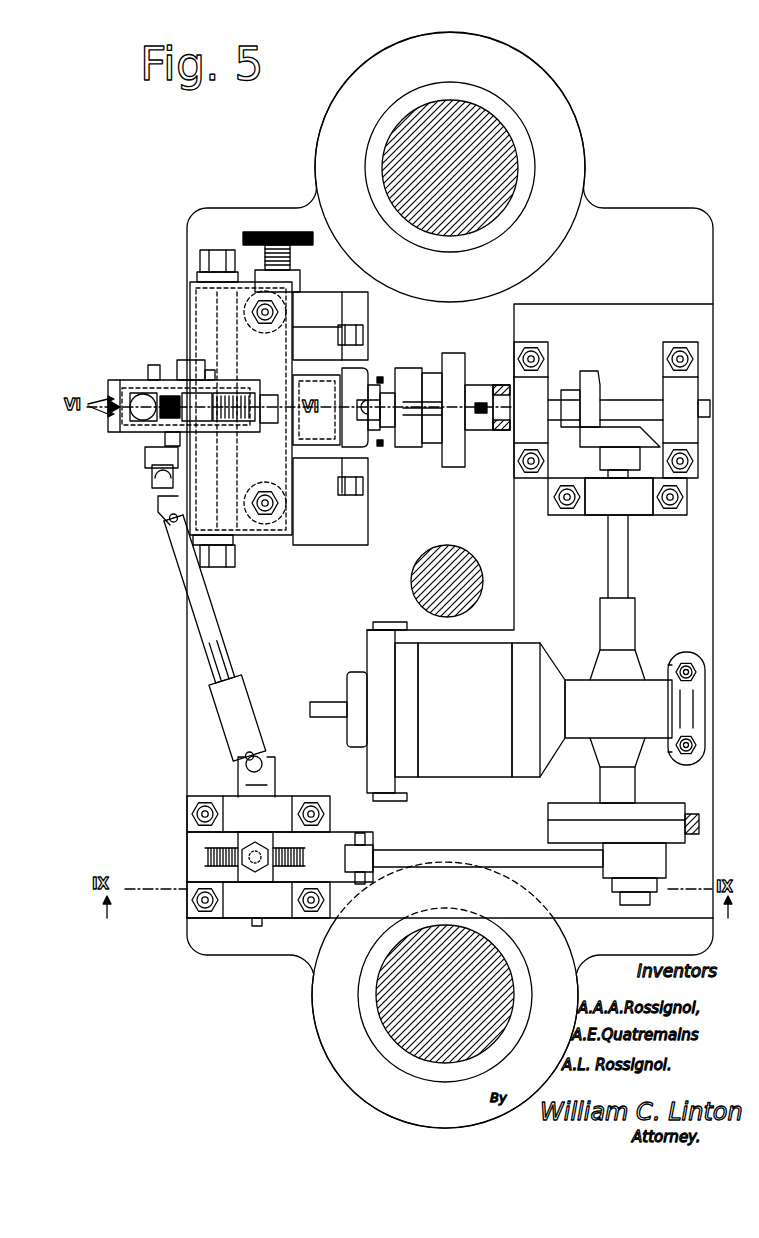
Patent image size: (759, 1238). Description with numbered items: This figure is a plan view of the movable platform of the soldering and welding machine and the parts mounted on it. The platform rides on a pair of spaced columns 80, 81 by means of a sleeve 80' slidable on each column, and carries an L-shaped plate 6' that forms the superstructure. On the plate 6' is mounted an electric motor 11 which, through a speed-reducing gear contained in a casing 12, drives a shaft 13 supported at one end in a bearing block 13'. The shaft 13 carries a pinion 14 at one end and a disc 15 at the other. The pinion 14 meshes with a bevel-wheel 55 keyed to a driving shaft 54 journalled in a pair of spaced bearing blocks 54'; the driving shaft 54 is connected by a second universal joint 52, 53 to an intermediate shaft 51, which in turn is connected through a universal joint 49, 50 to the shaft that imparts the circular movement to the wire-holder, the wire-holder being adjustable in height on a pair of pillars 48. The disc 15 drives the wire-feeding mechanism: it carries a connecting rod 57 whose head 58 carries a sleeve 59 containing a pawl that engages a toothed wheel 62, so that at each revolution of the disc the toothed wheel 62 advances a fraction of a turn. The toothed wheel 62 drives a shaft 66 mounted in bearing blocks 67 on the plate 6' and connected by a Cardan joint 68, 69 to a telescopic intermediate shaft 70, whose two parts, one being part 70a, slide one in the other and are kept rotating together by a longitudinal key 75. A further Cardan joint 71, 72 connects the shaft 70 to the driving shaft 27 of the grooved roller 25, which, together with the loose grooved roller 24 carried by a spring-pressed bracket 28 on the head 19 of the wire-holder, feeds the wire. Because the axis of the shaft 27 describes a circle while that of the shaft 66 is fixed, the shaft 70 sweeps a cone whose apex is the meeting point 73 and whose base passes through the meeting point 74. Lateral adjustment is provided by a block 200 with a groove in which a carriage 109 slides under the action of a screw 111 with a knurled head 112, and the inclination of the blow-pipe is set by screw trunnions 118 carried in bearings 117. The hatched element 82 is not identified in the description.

The column 81 is at (490, 122).
The sleeve 80' is at (468, 580).
The column 80 is at (394, 998).
The pillar 48 is at (262, 300).
The knurled head 112 is at (314, 238).
The screw 111 is at (292, 258).
The carriage 109 is at (322, 302).
The bearing 117 is at (318, 352).
The screw trunnion 118 is at (365, 333).
The universal joint 49 is at (368, 373).
The universal joint 50 is at (395, 418).
The intermediate shaft 51 is at (413, 418).
The second universal joint 52 is at (469, 425).
The second universal joint 53 is at (500, 402).
The head 19 is at (140, 393).
The grooved roller 24 is at (113, 400).
The grooved roller 25 is at (167, 394).
The bracket 28 is at (259, 393).
The driving shaft 27 is at (152, 447).
The Cardan joint 72 is at (150, 472).
The meeting point 74 is at (160, 480).
The Cardan joint 71 is at (162, 510).
The intermediate shaft 70 is at (205, 624).
The shaft part 70a is at (197, 603).
The longitudinal key 75 is at (221, 648).
The Cardan joint 69 is at (262, 750).
The meeting point 73 is at (248, 764).
The Cardan joint 68 is at (270, 773).
The bearing block 67 is at (192, 826).
The toothed wheel 62 is at (200, 852).
The sleeve 59 is at (248, 878).
The head 58 is at (333, 838).
The shaft 66 is at (258, 924).
The connecting rod 57 is at (517, 838).
The motor 11 is at (527, 660).
The casing 12 is at (577, 690).
The shaft 13 is at (638, 659).
The disc 15 is at (677, 803).
The shaft end 82 is at (438, 558).
The plate 6' is at (560, 579).
The driving shaft 54 is at (612, 418).
The bearing block 54' is at (605, 373).
The bevel-wheel 55 is at (592, 380).
The pinion 14 is at (626, 432).
The bearing block 13' is at (610, 516).
The block 200 is at (305, 540).